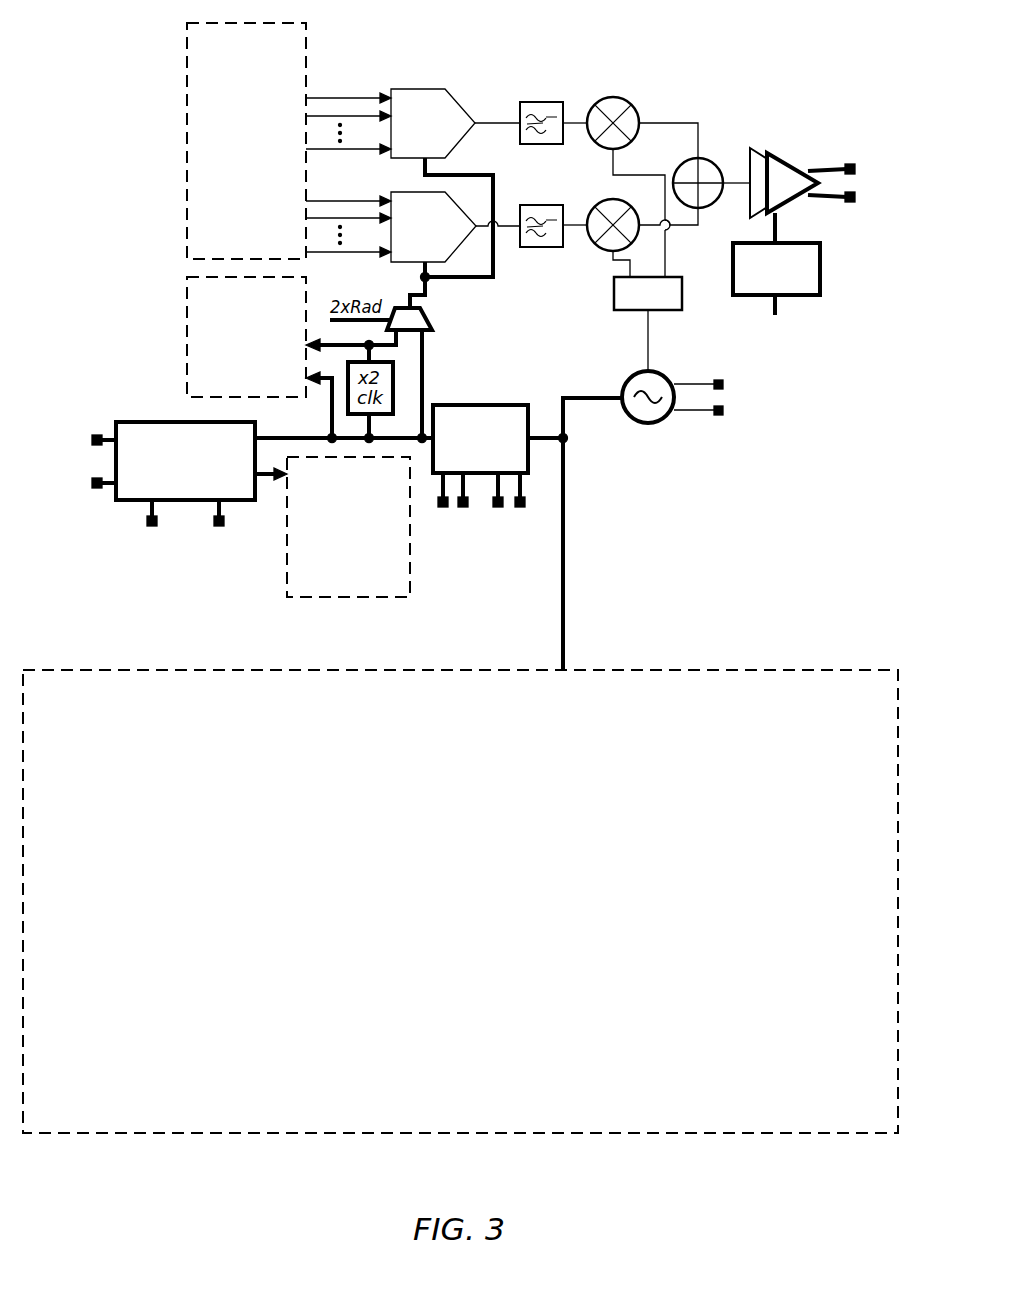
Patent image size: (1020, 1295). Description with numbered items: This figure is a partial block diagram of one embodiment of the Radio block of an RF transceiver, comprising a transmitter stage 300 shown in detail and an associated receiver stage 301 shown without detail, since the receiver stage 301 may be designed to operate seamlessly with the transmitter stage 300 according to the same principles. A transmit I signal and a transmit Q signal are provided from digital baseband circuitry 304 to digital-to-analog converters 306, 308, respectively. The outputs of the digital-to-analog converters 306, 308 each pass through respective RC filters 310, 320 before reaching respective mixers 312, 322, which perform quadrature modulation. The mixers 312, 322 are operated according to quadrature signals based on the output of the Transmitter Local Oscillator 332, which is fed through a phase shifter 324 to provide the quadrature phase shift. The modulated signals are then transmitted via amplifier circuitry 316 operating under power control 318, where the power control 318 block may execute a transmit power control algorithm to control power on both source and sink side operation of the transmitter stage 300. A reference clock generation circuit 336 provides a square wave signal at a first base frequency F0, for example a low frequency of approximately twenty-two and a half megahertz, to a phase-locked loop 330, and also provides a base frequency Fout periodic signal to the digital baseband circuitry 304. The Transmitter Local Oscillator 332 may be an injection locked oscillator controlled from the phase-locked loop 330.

The transmitter stage 300 is at (705, 32).
The receiver stage 301 is at (888, 1124).
The digital baseband circuitry 304 is at (230, 251).
The digital-to-analog converter 306 is at (434, 151).
The digital-to-analog converter 308 is at (434, 253).
The RC filter 310 is at (540, 144).
The mixer 312 is at (634, 106).
The amplifier circuitry 316 is at (790, 205).
The power control 318 is at (820, 262).
The RC filter 320 is at (540, 205).
The mixer 322 is at (600, 250).
The phase shifter 324 is at (634, 312).
The phase-locked loop 330 is at (490, 405).
The Transmitter Local Oscillator 332 is at (628, 382).
The reference clock generation circuit 336 is at (143, 422).